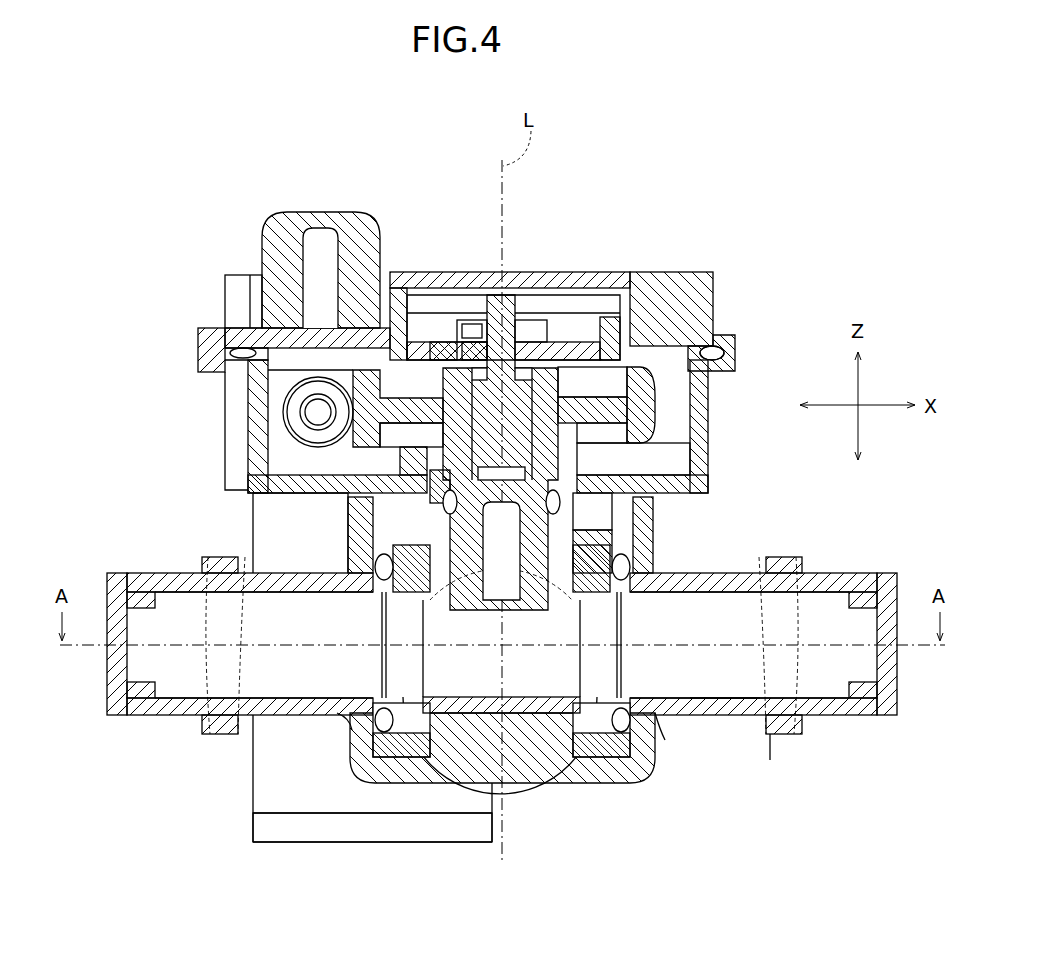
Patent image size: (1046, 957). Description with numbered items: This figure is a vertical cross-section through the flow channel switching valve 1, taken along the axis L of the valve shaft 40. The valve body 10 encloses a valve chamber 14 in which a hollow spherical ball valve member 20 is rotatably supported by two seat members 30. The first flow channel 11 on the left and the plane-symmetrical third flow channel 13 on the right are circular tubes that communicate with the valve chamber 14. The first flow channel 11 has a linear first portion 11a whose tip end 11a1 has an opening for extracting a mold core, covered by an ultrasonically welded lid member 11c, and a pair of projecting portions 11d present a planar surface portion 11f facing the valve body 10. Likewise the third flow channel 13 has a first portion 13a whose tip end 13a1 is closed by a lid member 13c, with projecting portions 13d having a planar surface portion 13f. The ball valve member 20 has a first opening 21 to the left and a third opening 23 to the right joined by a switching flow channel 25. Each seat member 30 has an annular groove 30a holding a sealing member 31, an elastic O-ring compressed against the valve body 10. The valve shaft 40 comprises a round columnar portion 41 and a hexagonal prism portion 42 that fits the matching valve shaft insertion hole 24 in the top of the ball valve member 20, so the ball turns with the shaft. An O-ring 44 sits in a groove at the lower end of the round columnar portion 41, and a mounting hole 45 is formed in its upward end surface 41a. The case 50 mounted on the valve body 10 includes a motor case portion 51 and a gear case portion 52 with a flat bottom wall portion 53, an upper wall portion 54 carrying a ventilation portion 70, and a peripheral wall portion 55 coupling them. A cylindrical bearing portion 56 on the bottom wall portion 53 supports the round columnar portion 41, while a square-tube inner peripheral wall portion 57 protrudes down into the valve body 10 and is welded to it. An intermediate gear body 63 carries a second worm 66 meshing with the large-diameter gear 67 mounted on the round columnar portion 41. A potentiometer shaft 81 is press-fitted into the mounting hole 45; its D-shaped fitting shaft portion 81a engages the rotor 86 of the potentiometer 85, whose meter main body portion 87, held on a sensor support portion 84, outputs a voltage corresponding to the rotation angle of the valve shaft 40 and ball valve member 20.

The flow channel switching valve 1 is at (245, 180).
The valve body 10 is at (522, 787).
The first flow channel 11 is at (118, 573).
The first portion 11a is at (178, 716).
The tip end 11a1 is at (140, 700).
The lid member 11c is at (112, 712).
The projecting portions 11d is at (216, 734).
The planar surface portion 11f is at (240, 740).
The third flow channel 13 is at (887, 573).
The first portion 13a is at (830, 716).
The tip end 13a1 is at (865, 700).
The lid member 13c is at (893, 712).
The projecting portions 13d is at (790, 734).
The planar surface portion 13f is at (760, 730).
The valve chamber 14 is at (535, 765).
The ball valve member 20 is at (455, 790).
The first opening 21 is at (345, 715).
The third opening 23 is at (672, 716).
The valve shaft insertion hole 24 is at (346, 545).
The switching flow channel 25 is at (699, 716).
The seat members 30 is at (425, 740).
The annular grooves 30a is at (385, 745).
The sealing members 31 is at (385, 735).
The valve shaft 40 is at (640, 400).
The round columnar portion 41 is at (590, 497).
The end surface 41a is at (540, 350).
The prism portion 42 is at (640, 550).
The O-ring 44 is at (620, 522).
The mounting hole 45 is at (580, 437).
The case 50 is at (727, 301).
The motor case portion 51 is at (465, 833).
The gear case portion 52 is at (690, 275).
The bottom wall portion 53 is at (267, 500).
The upper wall portion 54 is at (625, 282).
The peripheral wall portion 55 is at (250, 386).
The bearing portion 56 is at (700, 470).
The inner peripheral wall portion 57 is at (348, 517).
The intermediate gear body 63 is at (283, 405).
The second worm 66 is at (300, 430).
The large-diameter gear 67 is at (290, 462).
The ventilation portion 70 is at (330, 212).
The potentiometer shaft 81 is at (708, 376).
The fitting shaft portion 81a is at (500, 345).
The sensor support portion 84 is at (550, 332).
The potentiometer 85 is at (488, 212).
The rotor 86 is at (440, 330).
The meter main body portion 87 is at (475, 330).